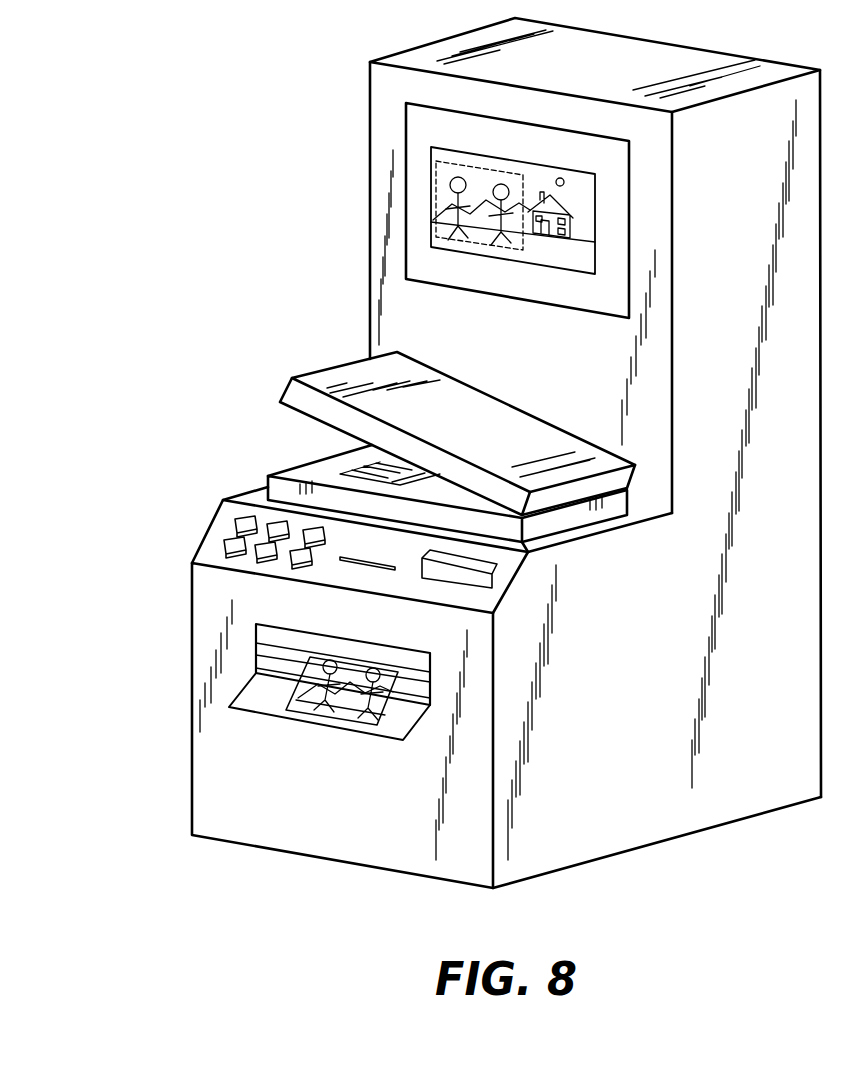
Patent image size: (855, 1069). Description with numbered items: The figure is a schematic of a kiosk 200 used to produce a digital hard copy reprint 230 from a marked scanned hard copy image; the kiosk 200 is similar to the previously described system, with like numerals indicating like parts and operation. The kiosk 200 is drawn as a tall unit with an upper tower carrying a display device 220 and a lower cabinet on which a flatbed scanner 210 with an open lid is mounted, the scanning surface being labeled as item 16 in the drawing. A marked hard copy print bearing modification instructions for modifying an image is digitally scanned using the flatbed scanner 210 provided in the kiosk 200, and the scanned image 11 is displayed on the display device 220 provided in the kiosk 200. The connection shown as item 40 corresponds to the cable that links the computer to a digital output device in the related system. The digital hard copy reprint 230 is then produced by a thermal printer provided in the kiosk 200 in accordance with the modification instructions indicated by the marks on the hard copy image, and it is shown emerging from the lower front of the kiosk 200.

The kiosk 200 is at (144, 397).
The display device 220 is at (418, 140).
The image 11 is at (428, 235).
The flatbed scanner 210 is at (330, 378).
The scanner platen glass 16 is at (357, 472).
The cable 40 is at (268, 638).
The digital hard copy reprint 230 is at (280, 697).